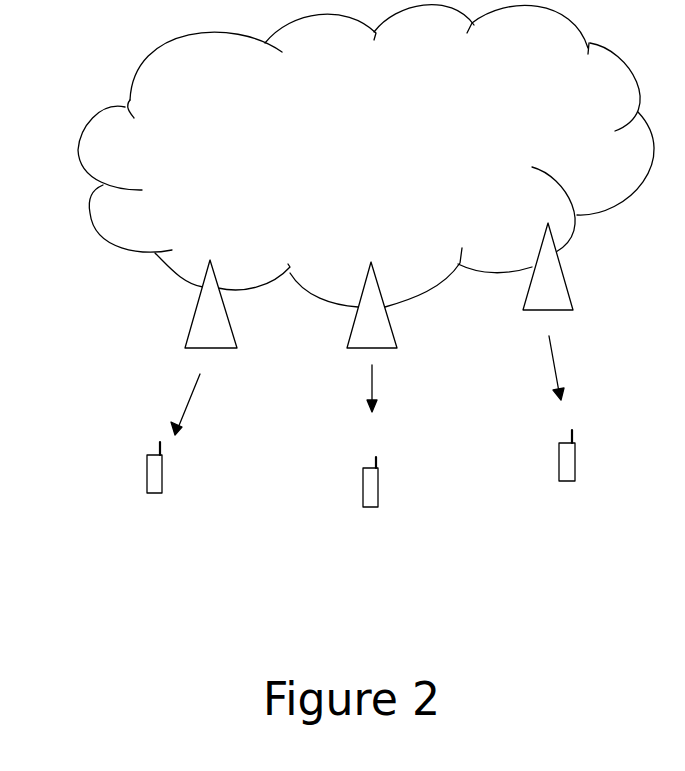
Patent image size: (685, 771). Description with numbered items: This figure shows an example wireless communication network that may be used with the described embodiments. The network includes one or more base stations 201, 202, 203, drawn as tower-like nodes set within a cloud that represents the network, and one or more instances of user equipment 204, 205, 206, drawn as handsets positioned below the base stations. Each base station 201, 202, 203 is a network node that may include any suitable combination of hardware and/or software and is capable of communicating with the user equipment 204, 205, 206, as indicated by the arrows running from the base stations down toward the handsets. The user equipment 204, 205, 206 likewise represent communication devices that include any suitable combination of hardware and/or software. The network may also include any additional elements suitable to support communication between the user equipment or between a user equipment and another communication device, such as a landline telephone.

The base station 201 is at (197, 304).
The base station 202 is at (390, 305).
The base station 203 is at (566, 266).
The user equipment 204 is at (156, 489).
The user equipment 205 is at (371, 501).
The user equipment 206 is at (566, 471).